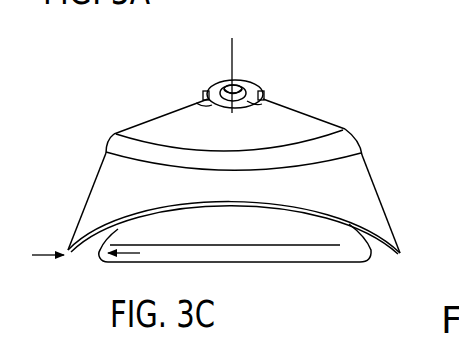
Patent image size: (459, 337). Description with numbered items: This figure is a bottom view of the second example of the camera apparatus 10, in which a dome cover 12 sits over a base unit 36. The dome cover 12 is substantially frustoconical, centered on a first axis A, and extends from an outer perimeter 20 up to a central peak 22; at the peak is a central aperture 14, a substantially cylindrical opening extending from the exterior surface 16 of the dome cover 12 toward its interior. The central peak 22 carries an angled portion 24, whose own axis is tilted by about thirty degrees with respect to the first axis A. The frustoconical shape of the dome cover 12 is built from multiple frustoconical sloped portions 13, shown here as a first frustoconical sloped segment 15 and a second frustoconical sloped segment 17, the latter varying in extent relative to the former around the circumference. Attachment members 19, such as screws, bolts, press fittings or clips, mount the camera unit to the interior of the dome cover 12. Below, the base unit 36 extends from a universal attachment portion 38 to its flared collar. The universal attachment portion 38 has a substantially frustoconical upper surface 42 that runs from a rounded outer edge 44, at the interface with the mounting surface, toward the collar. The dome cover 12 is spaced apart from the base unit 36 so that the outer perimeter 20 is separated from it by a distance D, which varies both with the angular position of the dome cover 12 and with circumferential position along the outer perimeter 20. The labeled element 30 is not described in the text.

The camera apparatus 10 is at (314, 83).
The dome cover 12 is at (390, 188).
The frustoconical sloped portions 13 is at (369, 152).
The central aperture 14 is at (238, 83).
The first frustoconical sloped segment 15 is at (155, 134).
The exterior surface 16 is at (174, 121).
The second frustoconical sloped segment 17 is at (95, 197).
The attachment members 19 is at (207, 89).
The outer perimeter 20 is at (72, 249).
The central peak 22 is at (250, 100).
The angled portion 24 is at (204, 102).
The central bore 30 is at (228, 83).
The base unit 36 is at (372, 252).
The universal attachment portion 38 is at (341, 263).
The frustoconical upper surface 42 is at (237, 227).
The rounded outer edge 44 is at (200, 252).
The first axis A is at (235, 62).
The distance D is at (86, 259).